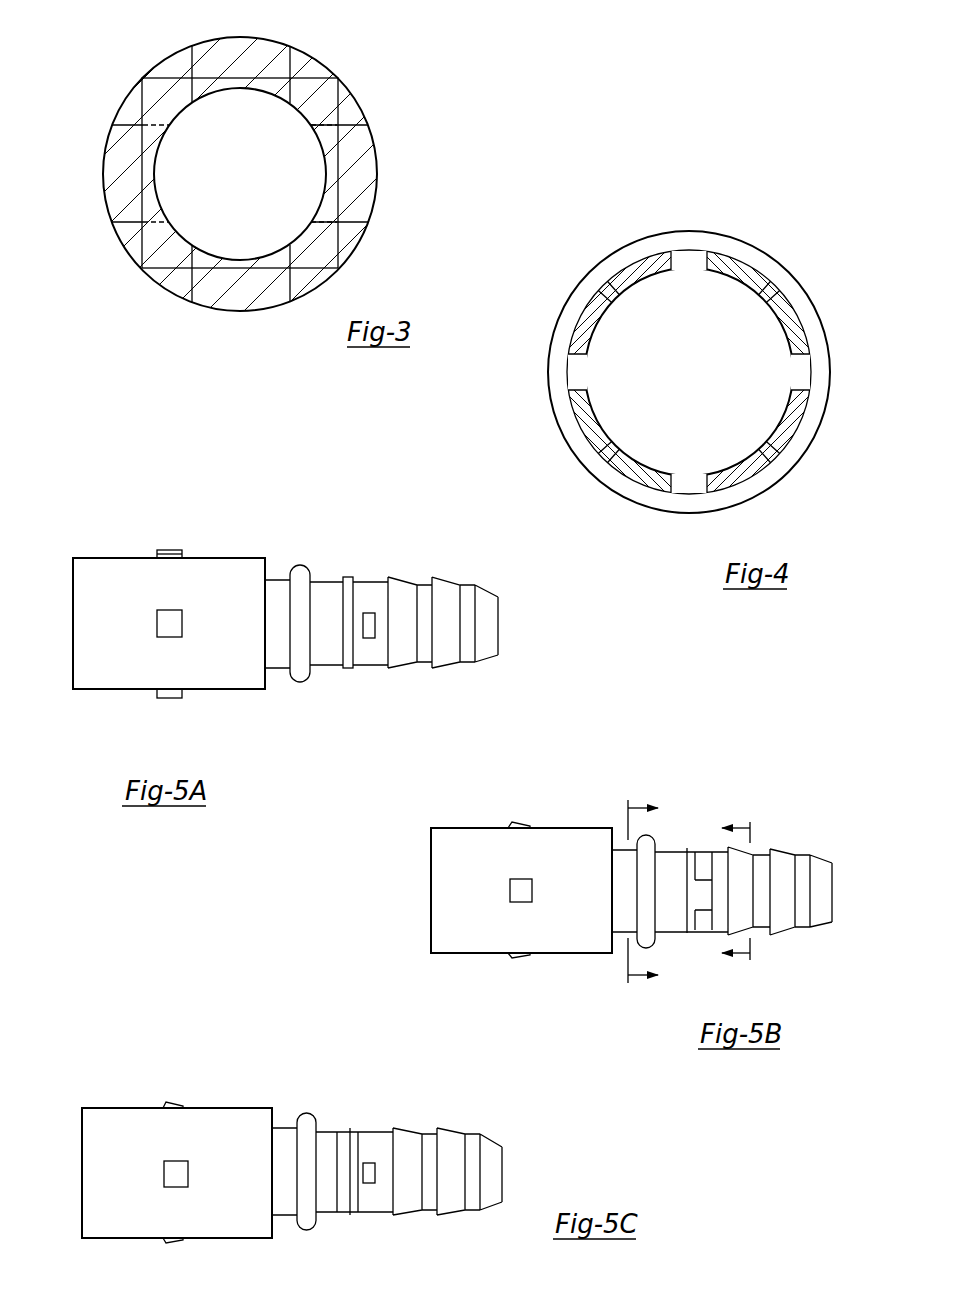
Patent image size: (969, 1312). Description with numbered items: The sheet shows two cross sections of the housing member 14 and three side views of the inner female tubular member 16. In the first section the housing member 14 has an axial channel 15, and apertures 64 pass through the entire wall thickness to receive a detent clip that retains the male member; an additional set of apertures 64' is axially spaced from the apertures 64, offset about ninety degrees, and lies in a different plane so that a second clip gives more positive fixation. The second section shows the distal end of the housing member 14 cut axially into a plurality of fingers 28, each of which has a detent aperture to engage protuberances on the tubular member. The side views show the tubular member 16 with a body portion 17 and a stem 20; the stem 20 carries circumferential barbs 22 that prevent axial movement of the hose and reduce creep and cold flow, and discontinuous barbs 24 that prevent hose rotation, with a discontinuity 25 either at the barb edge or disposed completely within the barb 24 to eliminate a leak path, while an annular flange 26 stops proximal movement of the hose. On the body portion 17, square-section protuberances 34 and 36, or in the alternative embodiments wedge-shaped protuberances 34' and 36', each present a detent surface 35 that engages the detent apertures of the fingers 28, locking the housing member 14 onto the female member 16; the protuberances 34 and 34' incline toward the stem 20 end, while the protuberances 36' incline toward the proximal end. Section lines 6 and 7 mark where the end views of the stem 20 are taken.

In FIG. 3, the housing member 14 is at (360, 167).
In FIG. 3, the axial channel 15 is at (218, 128).
In FIG. 3, the apertures 64 is at (251, 160).
In FIG. 3, the apertures 64' is at (204, 212).
In FIG. 4, the fingers 28 is at (742, 252).
In FIG. 5A, the inner female tubular member 16 is at (297, 604).
In FIG. 5B, the inner female tubular member 16 is at (648, 887).
In FIG. 5C, the inner female tubular member 16 is at (298, 1152).
In FIG. 5A, the body portion 17 is at (115, 572).
In FIG. 5B, the body portion 17 is at (455, 852).
In FIG. 5C, the body portion 17 is at (112, 1137).
In FIG. 5A, the stem 20 is at (415, 627).
In FIG. 5B, the stem 20 is at (762, 894).
In FIG. 5C, the stem 20 is at (415, 1145).
In FIG. 5B, the circumferential barbs 22 is at (738, 872).
In FIG. 5A, the discontinuous barbs 24 is at (372, 588).
In FIG. 5C, the discontinuous barbs 24 is at (367, 1142).
In FIG. 5A, the discontinuity 25 is at (362, 625).
In FIG. 5B, the discontinuity 25 is at (702, 893).
In FIG. 5C, the discontinuity 25 is at (368, 1173).
In FIG. 5B, the annular flange 26 is at (645, 850).
In FIG. 5A, the protuberances 34 is at (136, 611).
In FIG. 5C, the protuberances 34 is at (215, 1158).
In FIG. 5B, the wedge-shaped protuberances 34' is at (488, 896).
In FIG. 5A, the detent surface 35 is at (157, 555).
In FIG. 5B, the detent surface 35 is at (508, 957).
In FIG. 5A, the protuberances 36 is at (191, 604).
In FIG. 5B, the wedge-shaped protuberances 36' is at (519, 887).
In FIG. 5C, the wedge-shaped protuberances 36' is at (199, 1155).
In FIG. 5B, the section line 6- 6 is at (643, 892).
In FIG. 5B, the section line 7- 7 is at (736, 893).